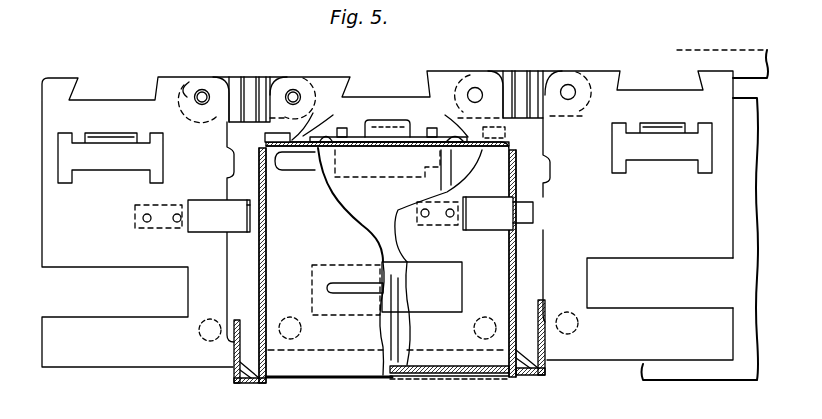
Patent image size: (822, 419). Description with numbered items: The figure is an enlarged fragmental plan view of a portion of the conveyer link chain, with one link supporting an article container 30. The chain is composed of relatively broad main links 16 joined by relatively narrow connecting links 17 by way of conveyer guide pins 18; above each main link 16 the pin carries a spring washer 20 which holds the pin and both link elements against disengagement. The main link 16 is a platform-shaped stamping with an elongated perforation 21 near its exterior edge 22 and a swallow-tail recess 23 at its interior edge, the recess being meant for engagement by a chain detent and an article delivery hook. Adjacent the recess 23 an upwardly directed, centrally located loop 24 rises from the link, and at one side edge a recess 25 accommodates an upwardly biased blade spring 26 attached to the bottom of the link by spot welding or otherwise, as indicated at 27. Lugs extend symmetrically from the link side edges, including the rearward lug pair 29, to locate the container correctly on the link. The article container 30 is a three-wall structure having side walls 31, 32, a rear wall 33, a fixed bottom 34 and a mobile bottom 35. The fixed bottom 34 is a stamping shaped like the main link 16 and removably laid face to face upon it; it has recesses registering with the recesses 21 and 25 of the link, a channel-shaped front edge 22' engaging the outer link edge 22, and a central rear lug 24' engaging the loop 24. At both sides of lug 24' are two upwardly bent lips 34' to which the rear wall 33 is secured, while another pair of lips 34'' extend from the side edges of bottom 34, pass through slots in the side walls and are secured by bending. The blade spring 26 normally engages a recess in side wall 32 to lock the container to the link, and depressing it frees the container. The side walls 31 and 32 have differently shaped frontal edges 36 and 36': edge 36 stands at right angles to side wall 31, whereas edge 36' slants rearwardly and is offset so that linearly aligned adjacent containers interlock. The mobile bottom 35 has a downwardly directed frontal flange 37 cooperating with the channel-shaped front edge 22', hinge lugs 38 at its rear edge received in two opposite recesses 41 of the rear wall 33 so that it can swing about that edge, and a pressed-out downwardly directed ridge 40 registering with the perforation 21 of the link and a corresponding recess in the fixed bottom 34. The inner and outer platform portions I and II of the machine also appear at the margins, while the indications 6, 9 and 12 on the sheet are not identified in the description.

The main link 16 is at (63, 76).
The swallow-tail recess 23 is at (72, 98).
The spring washer 20 is at (190, 88).
The conveyer guide pin 18 is at (204, 95).
The connecting link 17 is at (243, 82).
The loop 24 is at (385, 139).
The lug 24' is at (394, 116).
The upwardly bent lips 34' is at (385, 116).
The hinge lugs 38 is at (270, 138).
The blade spring 26 is at (208, 205).
The recess 25 is at (200, 234).
The spot weld attachment 27 is at (147, 223).
The recesses 41 is at (279, 158).
The rear wall 33 is at (322, 168).
The rearward lug pair 29 is at (546, 151).
The side wall 31 is at (261, 249).
The elongated perforation 21 is at (95, 272).
The ridge 40 is at (370, 295).
The fixed bottom 34 is at (387, 337).
The lips 34'' is at (243, 307).
The side wall 32 is at (233, 345).
The frontal edge 36 is at (393, 355).
The frontal edge 36' is at (381, 357).
The article container 30 is at (259, 384).
The mobile bottom 35 is at (308, 372).
The frontal flange 37 is at (437, 375).
The exterior edge 22 is at (449, 395).
The channel-shaped front edge 22' is at (449, 396).
The section line 9 is at (391, 62).
The section line 6 is at (552, 47).
The mounting plate 12 is at (679, 391).
The inner platform portions I is at (722, 35).
The outer platform portions II is at (710, 392).